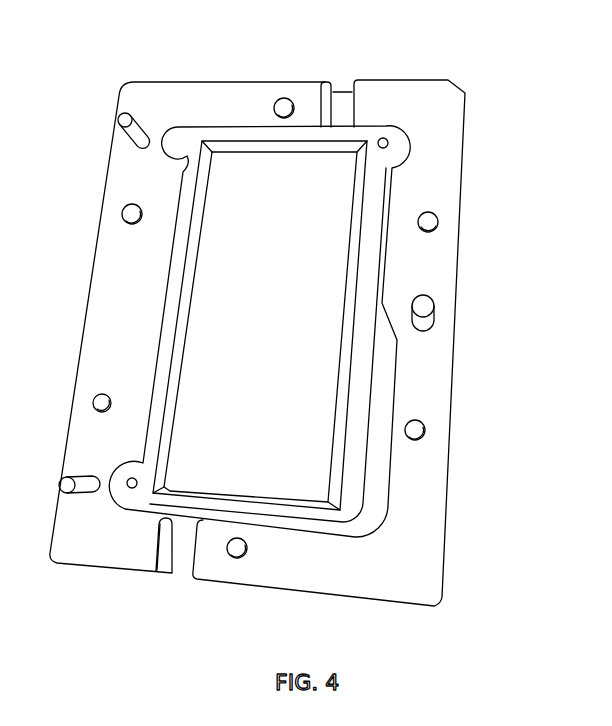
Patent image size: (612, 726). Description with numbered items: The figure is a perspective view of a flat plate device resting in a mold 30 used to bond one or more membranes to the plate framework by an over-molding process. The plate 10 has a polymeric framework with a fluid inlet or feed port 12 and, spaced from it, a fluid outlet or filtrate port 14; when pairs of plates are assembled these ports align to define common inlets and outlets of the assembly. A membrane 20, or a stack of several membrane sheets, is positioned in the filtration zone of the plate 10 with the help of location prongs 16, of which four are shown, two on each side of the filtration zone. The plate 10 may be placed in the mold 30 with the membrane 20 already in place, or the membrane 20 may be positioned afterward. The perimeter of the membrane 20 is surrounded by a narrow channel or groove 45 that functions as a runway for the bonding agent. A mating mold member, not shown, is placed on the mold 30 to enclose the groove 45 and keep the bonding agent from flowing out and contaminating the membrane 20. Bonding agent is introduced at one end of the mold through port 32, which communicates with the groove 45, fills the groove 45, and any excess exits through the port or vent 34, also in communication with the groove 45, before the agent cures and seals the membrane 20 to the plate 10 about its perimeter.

The plate 10 is at (274, 328).
The fluid inlet or feed port 12 is at (386, 141).
The fluid outlet or filtrate port 14 is at (128, 480).
The location prongs 16 is at (357, 195).
The membrane 20 is at (283, 333).
The mold 30 is at (452, 148).
The port 32 is at (180, 565).
The port or vent 34 is at (342, 100).
The channel or groove 45 is at (175, 352).